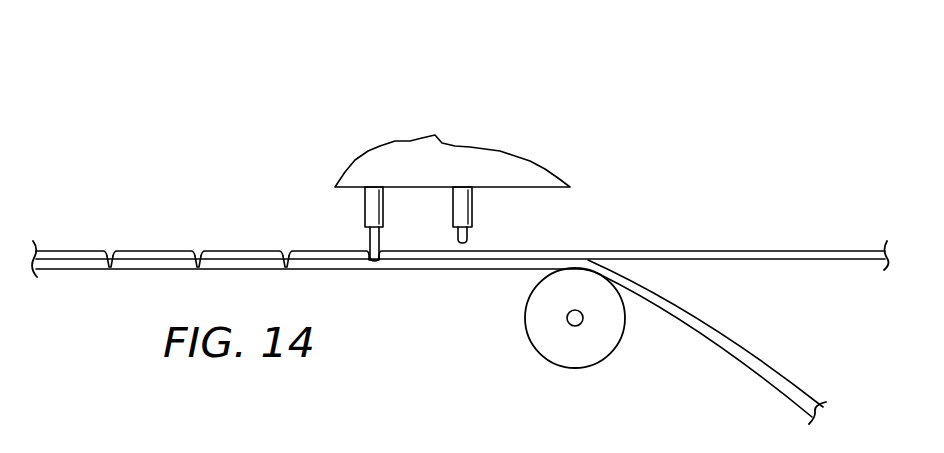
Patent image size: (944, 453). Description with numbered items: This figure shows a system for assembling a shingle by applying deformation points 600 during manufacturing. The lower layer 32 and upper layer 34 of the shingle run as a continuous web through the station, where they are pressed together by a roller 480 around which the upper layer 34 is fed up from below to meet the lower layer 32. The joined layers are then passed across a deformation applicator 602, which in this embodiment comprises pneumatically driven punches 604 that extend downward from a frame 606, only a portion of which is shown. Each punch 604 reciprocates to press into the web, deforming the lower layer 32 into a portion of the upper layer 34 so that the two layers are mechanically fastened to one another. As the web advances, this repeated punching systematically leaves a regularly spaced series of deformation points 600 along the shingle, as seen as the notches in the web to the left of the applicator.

The lower layer 32 is at (766, 250).
The upper layer 34 is at (763, 364).
The roller 480 is at (525, 322).
The deformation points 600 is at (110, 250).
The deformation applicator 602 is at (433, 163).
The pneumatically driven punch 604 is at (364, 207).
The frame 606 is at (413, 139).